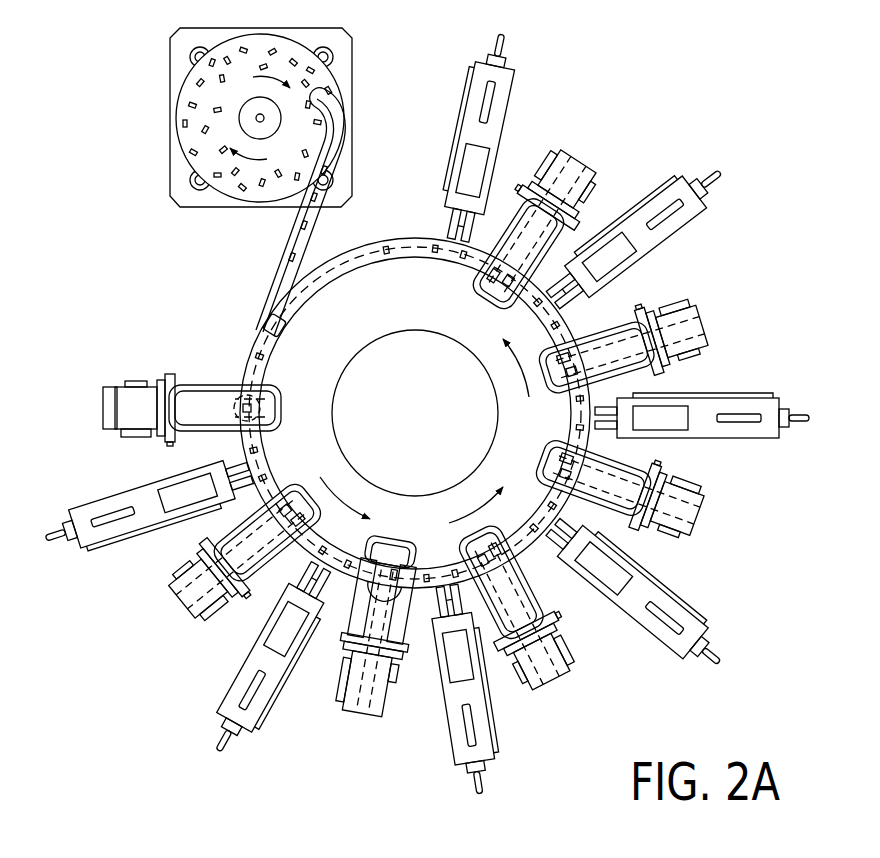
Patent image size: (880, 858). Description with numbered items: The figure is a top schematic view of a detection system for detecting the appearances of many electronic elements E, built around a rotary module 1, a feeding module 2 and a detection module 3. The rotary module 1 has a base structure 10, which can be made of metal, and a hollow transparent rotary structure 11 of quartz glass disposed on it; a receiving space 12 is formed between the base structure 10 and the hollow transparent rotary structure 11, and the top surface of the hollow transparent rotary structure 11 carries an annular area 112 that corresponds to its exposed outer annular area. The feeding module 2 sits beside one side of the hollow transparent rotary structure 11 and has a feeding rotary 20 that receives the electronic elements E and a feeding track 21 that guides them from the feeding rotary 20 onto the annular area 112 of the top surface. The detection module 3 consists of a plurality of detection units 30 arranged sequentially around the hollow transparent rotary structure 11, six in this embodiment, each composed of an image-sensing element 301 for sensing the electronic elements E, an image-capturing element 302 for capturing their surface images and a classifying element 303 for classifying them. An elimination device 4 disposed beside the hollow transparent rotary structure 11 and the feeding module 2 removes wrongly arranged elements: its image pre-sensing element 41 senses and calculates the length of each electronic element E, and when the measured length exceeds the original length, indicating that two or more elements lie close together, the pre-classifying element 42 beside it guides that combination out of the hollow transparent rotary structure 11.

The rotary module 1 is at (365, 361).
The base structure 10 is at (395, 273).
The hollow transparent rotary structure 11 is at (420, 240).
The receiving space 12 is at (355, 303).
The annular area 112 is at (240, 368).
The electronic elements E is at (245, 346).
The feeding module 2 is at (261, 182).
The feeding rotary 20 is at (237, 195).
The feeding track 21 is at (290, 244).
The detection module 3 is at (424, 412).
The detection unit 30 is at (464, 412).
The image-sensing element 301 is at (590, 171).
The image-capturing element 302 is at (557, 167).
The classifying element 303 is at (642, 142).
The elimination device 4 is at (149, 468).
The image pre-sensing element 41 is at (108, 418).
The pre-classifying element 42 is at (110, 500).